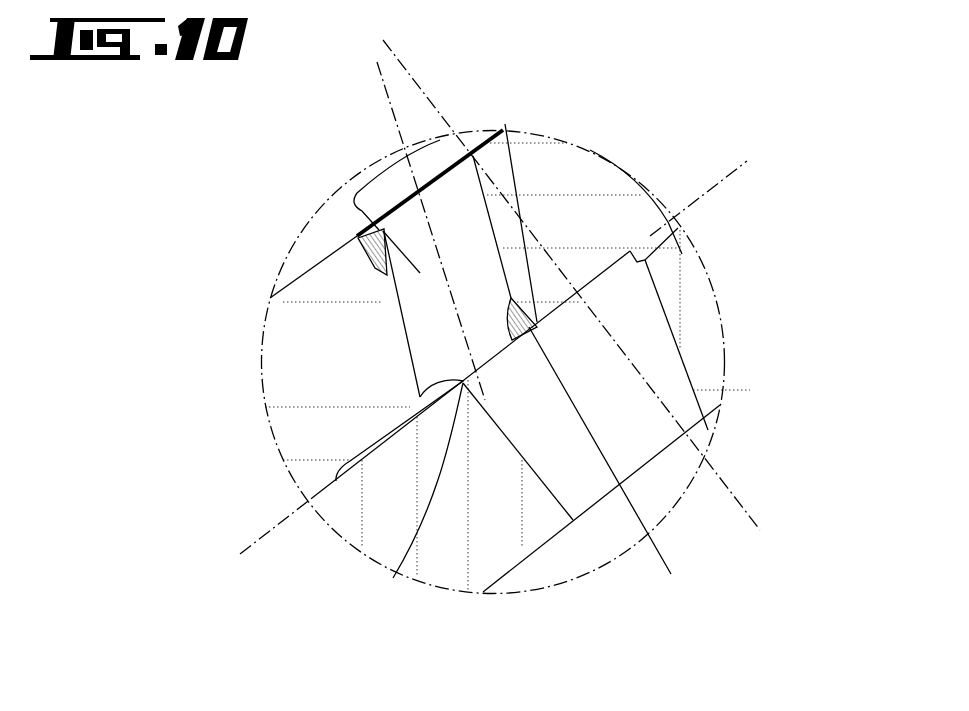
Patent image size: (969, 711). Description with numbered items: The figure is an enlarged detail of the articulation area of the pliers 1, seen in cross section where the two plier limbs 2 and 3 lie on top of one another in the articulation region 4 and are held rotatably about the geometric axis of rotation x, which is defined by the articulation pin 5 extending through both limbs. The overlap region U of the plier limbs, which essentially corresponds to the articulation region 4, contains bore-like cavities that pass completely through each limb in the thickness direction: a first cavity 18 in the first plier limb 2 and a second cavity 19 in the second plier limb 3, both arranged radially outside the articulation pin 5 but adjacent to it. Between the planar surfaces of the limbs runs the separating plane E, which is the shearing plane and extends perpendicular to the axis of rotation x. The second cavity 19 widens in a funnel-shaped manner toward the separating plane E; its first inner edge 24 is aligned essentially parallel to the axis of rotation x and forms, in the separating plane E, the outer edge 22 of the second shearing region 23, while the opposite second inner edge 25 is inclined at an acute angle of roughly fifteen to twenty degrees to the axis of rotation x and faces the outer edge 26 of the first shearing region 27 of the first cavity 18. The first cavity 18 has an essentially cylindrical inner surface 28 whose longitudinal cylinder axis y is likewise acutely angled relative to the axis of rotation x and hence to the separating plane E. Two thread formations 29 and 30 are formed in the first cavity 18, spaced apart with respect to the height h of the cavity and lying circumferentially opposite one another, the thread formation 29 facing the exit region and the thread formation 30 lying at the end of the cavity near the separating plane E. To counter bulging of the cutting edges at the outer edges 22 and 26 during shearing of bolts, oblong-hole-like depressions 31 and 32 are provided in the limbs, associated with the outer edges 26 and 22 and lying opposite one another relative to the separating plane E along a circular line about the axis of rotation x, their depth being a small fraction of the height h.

The pliers 1 is at (282, 208).
The first plier limb 2 is at (307, 378).
The second plier limb 3 is at (438, 533).
The articulation region 4 is at (347, 340).
The articulation pin 5 is at (485, 130).
The first cavity 18 is at (412, 354).
The second cavity 19 is at (637, 437).
The outer edge 22 is at (433, 423).
The second shearing region 23 is at (458, 386).
The first inner edge 24 is at (543, 488).
The second inner edge 25 is at (693, 392).
The outer edge 26 is at (630, 250).
The first shearing region 27 is at (541, 322).
The cylindrical inner surface 28 is at (513, 228).
The thread formation 29 is at (376, 268).
The second thread formation 30 is at (612, 464).
The depression 31 is at (343, 463).
The depression 32 is at (653, 246).
The overlap region U is at (347, 313).
The separating plane E is at (494, 353).
The axis of rotation x is at (440, 112).
The longitudinal cylinder axis y is at (397, 125).
The height of the first cavity h is at (447, 276).